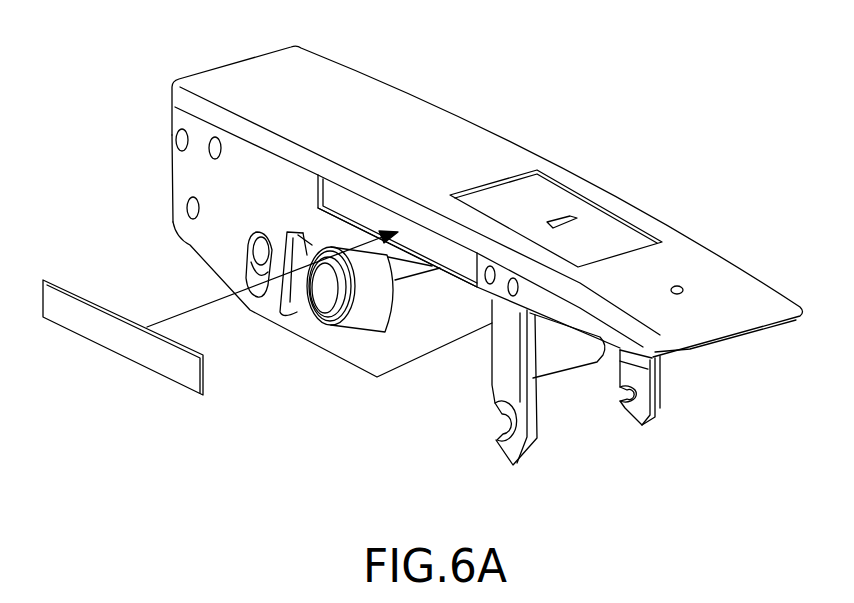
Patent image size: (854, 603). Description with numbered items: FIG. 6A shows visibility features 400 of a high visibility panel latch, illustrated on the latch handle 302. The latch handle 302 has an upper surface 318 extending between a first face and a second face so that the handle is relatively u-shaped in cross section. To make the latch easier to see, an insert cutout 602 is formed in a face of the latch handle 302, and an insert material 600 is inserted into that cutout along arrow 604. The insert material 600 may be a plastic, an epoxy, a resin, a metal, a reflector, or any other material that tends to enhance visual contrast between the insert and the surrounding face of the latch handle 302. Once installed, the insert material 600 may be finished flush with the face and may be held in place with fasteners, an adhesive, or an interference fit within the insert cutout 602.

The latch handle 302 is at (727, 219).
The visibility features 400 is at (428, 136).
The upper surface 318 is at (235, 188).
The insert material 600 is at (68, 313).
The insert cutout 602 is at (463, 258).
The arrow 604 is at (213, 303).